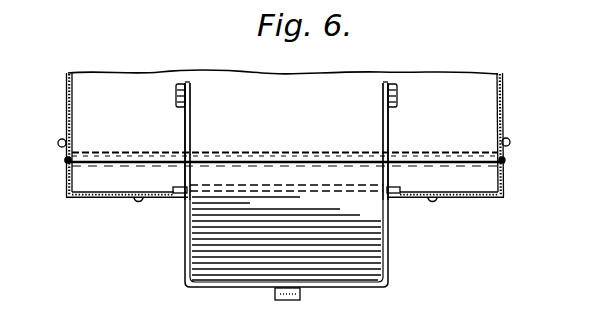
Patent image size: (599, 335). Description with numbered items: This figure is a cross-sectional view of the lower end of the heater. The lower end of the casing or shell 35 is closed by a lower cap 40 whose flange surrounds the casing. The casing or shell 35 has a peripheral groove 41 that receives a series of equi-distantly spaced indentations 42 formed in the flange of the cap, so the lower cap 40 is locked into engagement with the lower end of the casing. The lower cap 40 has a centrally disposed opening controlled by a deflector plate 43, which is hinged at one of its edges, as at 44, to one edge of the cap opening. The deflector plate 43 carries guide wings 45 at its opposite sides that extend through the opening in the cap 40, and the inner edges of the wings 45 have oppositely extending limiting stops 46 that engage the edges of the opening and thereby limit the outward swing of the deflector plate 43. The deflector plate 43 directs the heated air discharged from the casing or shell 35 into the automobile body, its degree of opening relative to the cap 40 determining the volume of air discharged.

The casing or shell 35 is at (503, 115).
The lower cap 40 is at (472, 196).
The peripheral groove 41 is at (75, 162).
The indentations 42 is at (66, 158).
The deflector plate 43 is at (350, 262).
The hinge 44 is at (384, 184).
The guide wings 45 is at (185, 231).
The limiting stops 46 is at (176, 100).